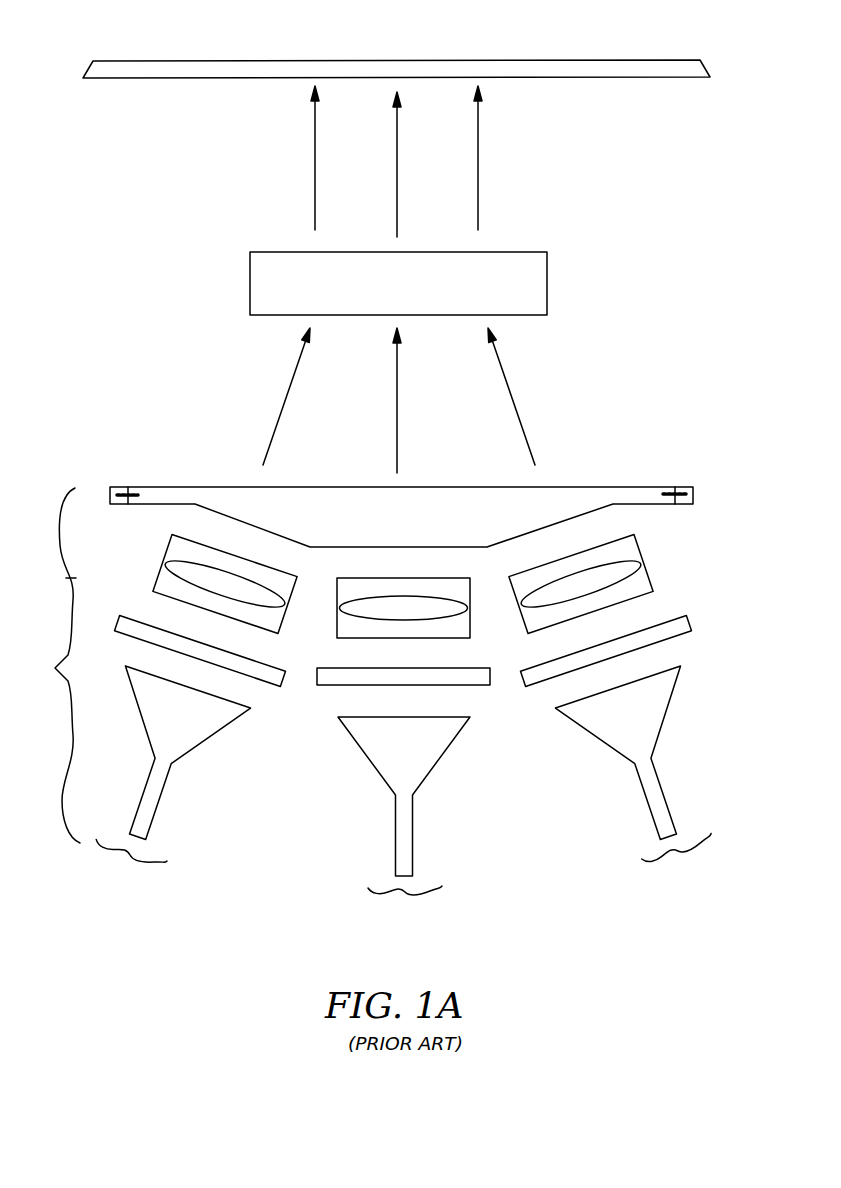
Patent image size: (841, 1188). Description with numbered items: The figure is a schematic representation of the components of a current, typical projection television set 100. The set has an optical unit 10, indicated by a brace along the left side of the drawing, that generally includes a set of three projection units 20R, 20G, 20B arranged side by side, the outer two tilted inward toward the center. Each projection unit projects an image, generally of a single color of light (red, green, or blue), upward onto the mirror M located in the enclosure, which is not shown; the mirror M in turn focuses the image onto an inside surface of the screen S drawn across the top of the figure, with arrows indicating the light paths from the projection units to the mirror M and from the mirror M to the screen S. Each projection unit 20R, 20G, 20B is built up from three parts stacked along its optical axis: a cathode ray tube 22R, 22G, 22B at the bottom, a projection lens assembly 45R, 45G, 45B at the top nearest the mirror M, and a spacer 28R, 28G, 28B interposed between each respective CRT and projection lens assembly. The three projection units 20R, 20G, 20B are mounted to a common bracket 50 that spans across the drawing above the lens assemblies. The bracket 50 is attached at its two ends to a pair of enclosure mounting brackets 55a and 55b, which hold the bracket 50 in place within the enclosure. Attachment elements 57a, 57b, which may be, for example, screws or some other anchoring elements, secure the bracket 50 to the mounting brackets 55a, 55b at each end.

The screen S is at (121, 68).
The mirror M is at (533, 282).
The projection television set 100 is at (105, 309).
The optical unit 10 is at (55, 665).
The bracket 50 is at (565, 493).
The enclosure mounting bracket 55a is at (110, 495).
The enclosure mounting bracket 55b is at (693, 494).
The attachment element 57a is at (137, 490).
The attachment element 57b is at (668, 487).
The projection lens assembly 45R is at (216, 556).
The projection lens assembly 45G is at (362, 583).
The projection lens assembly 45B is at (575, 558).
The spacer 28R is at (131, 620).
The spacer 28G is at (327, 683).
The spacer 28B is at (677, 620).
The cathode ray tube 22R is at (187, 733).
The cathode ray tube 22G is at (413, 745).
The cathode ray tube 22B is at (648, 705).
The projection unit 20R is at (130, 865).
The projection unit 20G is at (405, 907).
The projection unit 20B is at (677, 861).